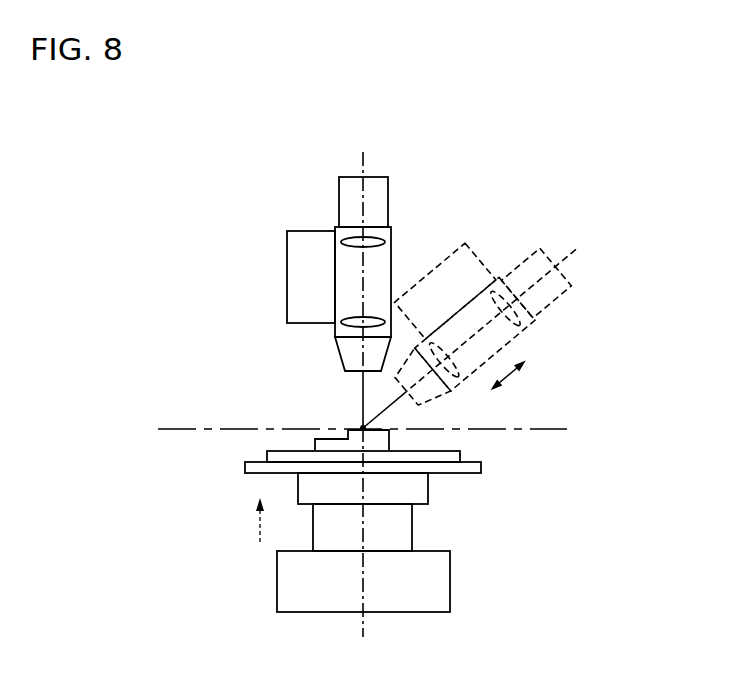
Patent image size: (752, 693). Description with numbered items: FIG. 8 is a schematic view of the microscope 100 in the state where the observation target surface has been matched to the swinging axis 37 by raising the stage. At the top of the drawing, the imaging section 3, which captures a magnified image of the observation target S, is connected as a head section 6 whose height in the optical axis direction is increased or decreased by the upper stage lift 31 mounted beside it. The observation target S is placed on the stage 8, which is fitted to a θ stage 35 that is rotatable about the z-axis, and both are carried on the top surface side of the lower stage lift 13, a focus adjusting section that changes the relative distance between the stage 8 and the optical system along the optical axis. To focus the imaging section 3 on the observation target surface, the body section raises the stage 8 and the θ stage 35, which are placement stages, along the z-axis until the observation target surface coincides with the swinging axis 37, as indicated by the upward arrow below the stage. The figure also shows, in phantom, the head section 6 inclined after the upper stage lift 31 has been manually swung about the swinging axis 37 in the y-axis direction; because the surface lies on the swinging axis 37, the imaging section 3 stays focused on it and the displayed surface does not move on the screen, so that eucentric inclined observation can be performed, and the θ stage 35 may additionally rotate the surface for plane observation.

The microscope 100 is at (247, 210).
The imaging section 3 is at (373, 201).
The upper stage lift 31 is at (310, 273).
The head section 6 is at (373, 278).
The swinging axis 37 is at (363, 428).
The observation target S is at (375, 442).
The stage 8 is at (248, 466).
The θ stage 35 is at (405, 514).
The lower stage lift 13 is at (393, 545).